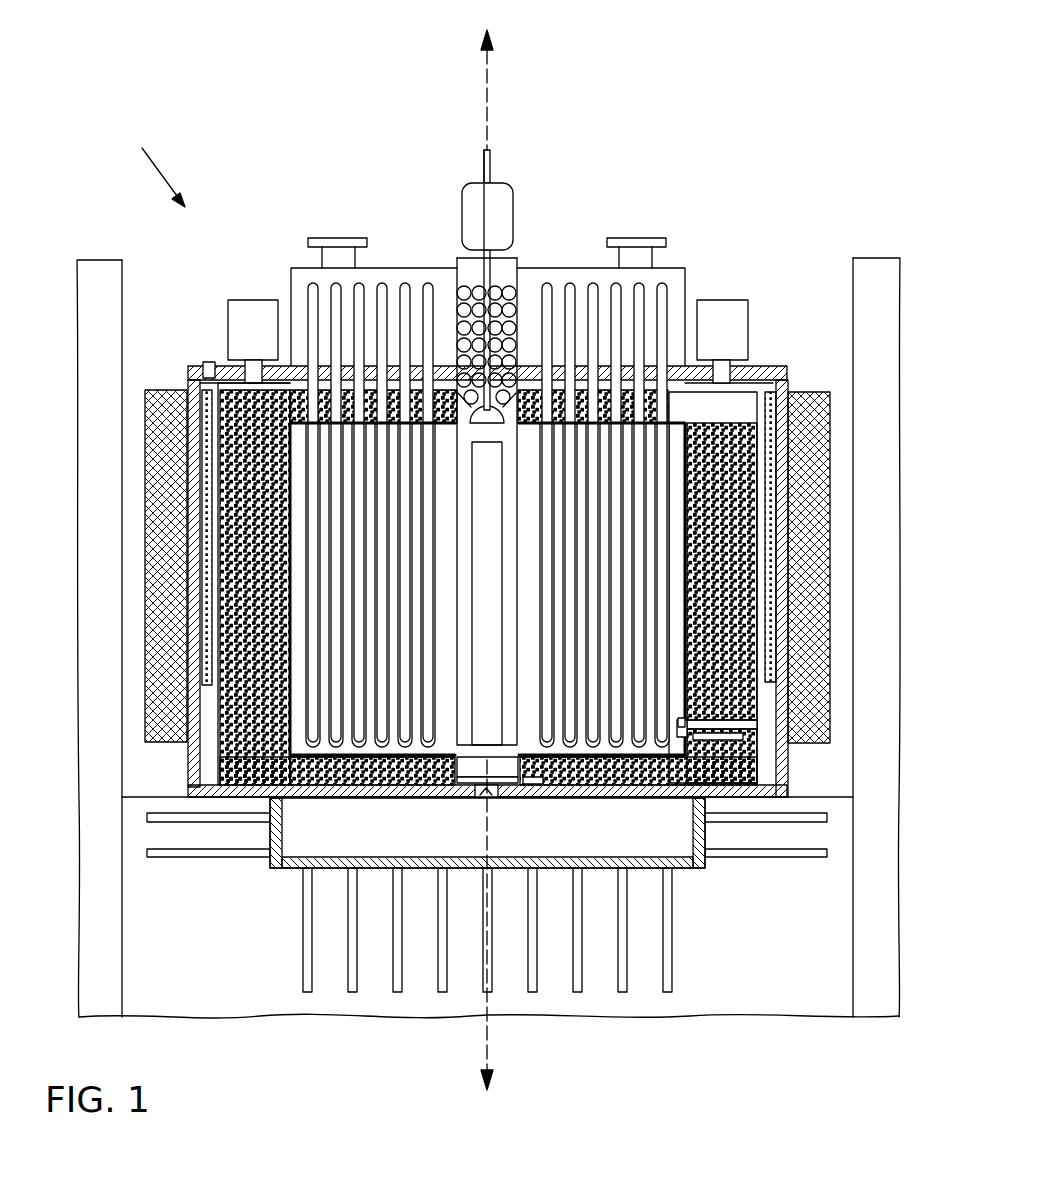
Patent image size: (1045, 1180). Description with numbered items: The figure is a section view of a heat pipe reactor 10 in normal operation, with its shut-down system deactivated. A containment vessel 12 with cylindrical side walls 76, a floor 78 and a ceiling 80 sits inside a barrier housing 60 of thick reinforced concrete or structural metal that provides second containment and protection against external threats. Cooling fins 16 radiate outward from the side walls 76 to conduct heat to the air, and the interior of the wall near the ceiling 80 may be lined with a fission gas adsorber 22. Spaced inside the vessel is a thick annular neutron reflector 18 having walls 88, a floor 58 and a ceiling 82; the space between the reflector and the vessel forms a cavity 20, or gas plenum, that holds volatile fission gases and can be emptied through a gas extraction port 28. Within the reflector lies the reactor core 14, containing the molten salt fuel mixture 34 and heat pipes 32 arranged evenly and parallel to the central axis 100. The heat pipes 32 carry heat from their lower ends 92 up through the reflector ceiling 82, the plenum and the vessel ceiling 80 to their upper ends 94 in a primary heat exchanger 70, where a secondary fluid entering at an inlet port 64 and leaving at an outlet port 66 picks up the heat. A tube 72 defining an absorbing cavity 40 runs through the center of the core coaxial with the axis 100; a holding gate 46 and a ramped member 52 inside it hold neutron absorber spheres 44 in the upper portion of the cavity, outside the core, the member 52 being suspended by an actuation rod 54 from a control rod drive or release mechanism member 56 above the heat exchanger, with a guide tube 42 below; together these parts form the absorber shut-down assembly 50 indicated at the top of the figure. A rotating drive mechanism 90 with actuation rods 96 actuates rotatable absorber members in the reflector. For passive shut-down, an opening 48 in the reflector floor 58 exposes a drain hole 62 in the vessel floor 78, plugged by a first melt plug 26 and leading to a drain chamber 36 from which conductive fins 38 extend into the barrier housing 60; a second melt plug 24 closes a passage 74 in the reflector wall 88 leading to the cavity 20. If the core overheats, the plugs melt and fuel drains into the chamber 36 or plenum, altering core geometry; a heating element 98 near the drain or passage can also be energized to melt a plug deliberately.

The reactor 10 is at (149, 170).
The containment vessel 12 is at (787, 437).
The reactor core 14 is at (690, 612).
The cooling fins 16 is at (807, 473).
The neutron reflector 18 is at (733, 678).
The cavity 20 is at (767, 707).
The fission gas adsorber 22 is at (772, 562).
The second melt plug 24 is at (757, 725).
The first melt plug 26 is at (493, 797).
The gas extraction port 28 is at (208, 362).
The heat pipes 32 is at (335, 602).
The molten salt fuel mixture 34 is at (530, 713).
The drain chamber 36 is at (677, 837).
The conductive fins 38 is at (158, 857).
The absorbing cavity 40 is at (463, 532).
The guide tube 42 is at (503, 490).
The neutron absorber spheres 44 is at (470, 292).
The holding gate 46 is at (505, 355).
The opening 48 is at (456, 768).
The feed assembly 50 is at (517, 180).
The ramped member 52 is at (492, 283).
The actuation rod 54 is at (517, 268).
The control rod drive or release mechanism member 56 is at (497, 193).
The floor 58 is at (243, 773).
The barrier housing 60 is at (820, 967).
The drain hole 62 is at (470, 797).
The secondary fluid inlet port 64 is at (340, 262).
The secondary fluid outlet port 66 is at (640, 262).
The primary heat exchanger 70 is at (302, 282).
The tube 72 is at (453, 475).
The passage 74 is at (675, 737).
The side walls 76 is at (783, 520).
The floor 78 is at (347, 767).
The ceiling 80 is at (752, 370).
The ceiling 82 is at (223, 403).
The walls 88 is at (757, 632).
The rotating drive mechanism 90 is at (257, 312).
The ends 92 is at (313, 737).
The ends 94 is at (390, 297).
The actuation rods 96 is at (723, 375).
The heating element 98 is at (535, 785).
The central axis 100 is at (487, 548).